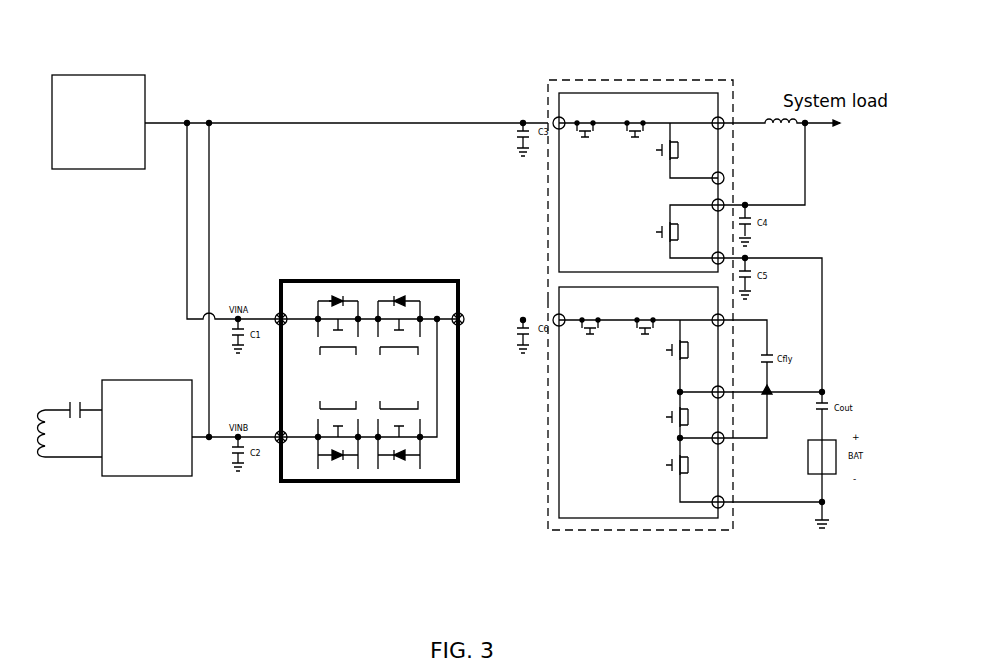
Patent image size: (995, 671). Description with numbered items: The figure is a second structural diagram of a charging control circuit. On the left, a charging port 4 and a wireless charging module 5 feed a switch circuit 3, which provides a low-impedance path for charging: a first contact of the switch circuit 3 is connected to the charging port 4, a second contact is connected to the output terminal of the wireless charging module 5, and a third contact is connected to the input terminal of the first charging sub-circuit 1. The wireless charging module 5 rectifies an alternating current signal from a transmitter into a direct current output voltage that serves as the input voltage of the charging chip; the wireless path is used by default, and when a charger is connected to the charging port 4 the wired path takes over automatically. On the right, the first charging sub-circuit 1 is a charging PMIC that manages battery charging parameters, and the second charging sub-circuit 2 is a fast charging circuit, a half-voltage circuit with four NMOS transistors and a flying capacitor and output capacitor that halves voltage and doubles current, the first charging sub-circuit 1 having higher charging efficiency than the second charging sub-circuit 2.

The first charging sub-circuit 1 is at (640, 528).
The second charging sub-circuit 2 is at (641, 80).
The switch circuit 3 is at (371, 281).
The charging port 4 is at (104, 75).
The wireless charging module 5 is at (137, 380).